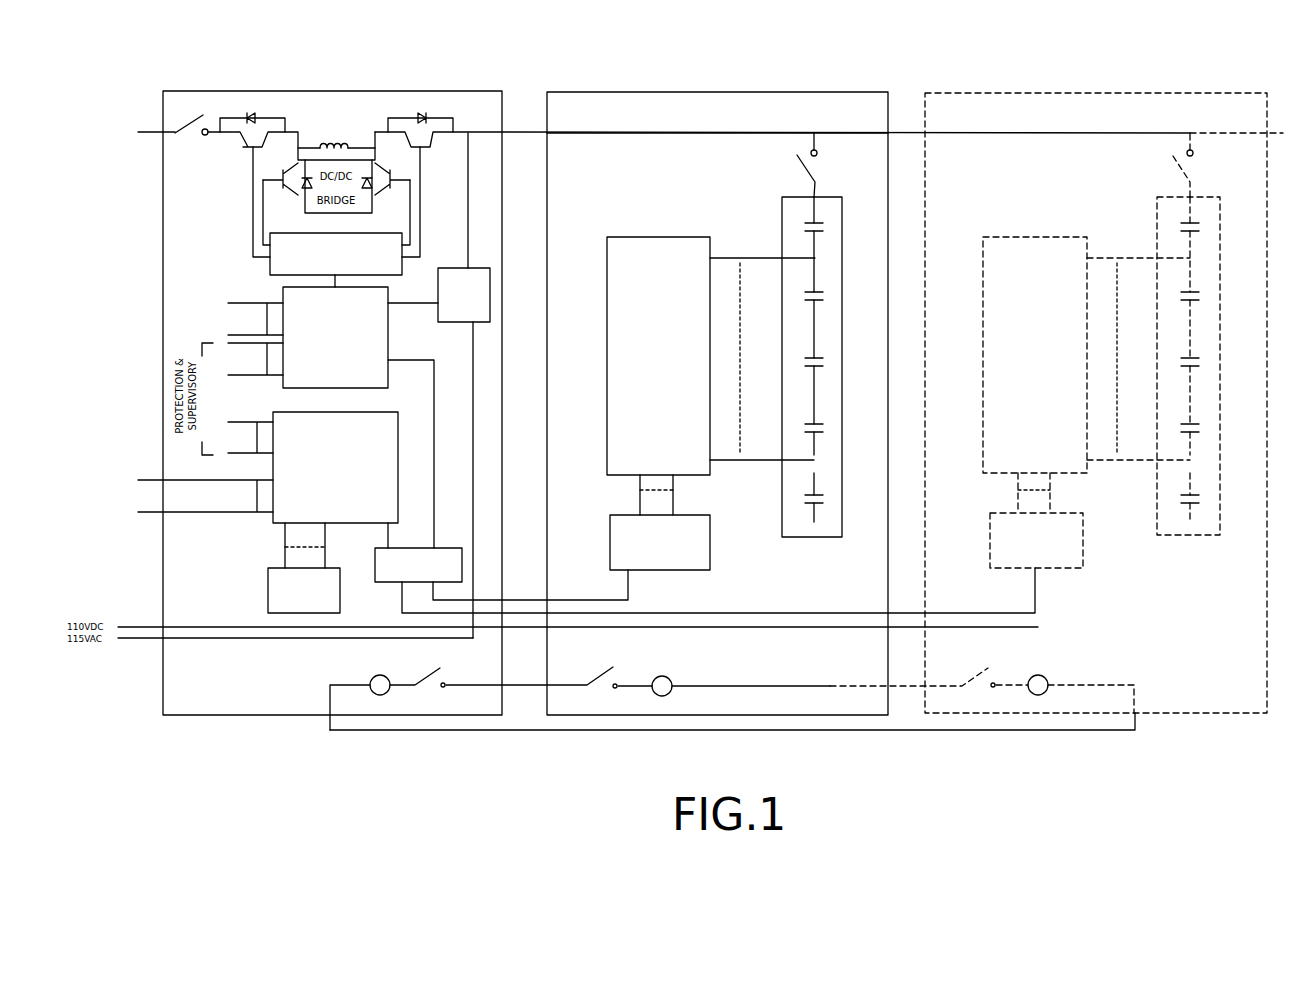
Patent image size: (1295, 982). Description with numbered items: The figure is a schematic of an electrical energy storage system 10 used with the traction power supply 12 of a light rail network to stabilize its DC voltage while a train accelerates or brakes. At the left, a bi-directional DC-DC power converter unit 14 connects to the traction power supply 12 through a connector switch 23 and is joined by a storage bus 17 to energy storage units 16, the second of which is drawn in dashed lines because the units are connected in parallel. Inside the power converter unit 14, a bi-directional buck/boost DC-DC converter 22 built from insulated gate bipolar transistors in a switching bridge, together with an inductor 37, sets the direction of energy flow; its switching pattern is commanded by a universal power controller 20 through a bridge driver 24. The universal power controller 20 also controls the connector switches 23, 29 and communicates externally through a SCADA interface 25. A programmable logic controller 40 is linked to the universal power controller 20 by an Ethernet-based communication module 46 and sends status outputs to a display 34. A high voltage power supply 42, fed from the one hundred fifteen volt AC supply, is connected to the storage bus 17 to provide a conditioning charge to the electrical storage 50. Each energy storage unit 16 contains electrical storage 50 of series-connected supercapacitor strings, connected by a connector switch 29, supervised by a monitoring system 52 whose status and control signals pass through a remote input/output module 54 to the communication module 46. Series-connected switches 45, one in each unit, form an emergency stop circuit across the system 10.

The electrical energy storage system 10 is at (235, 755).
The traction power supply 12 is at (148, 130).
The bi-directional DC-DC power converter unit 14 is at (462, 74).
The energy storage unit 16 is at (598, 78).
The storage bus 17 is at (732, 133).
The universal power controller 20 is at (388, 297).
The bi-directional buck/boost DC-DC converter 22 is at (205, 240).
The connector switch 23 is at (187, 125).
The bridge driver 24 is at (270, 263).
The SCADA interface 25 is at (143, 478).
The connector switch 29 is at (803, 160).
The display 34 is at (268, 597).
The inductor 37 is at (347, 147).
The programmable logic controller 40 is at (385, 412).
The high voltage power supply 42 is at (462, 268).
The switch 45 is at (430, 675).
The communication module 46 is at (450, 545).
The electrical storage 50 is at (782, 232).
The monitoring system 52 is at (650, 237).
The remote input/output module 54 is at (712, 533).